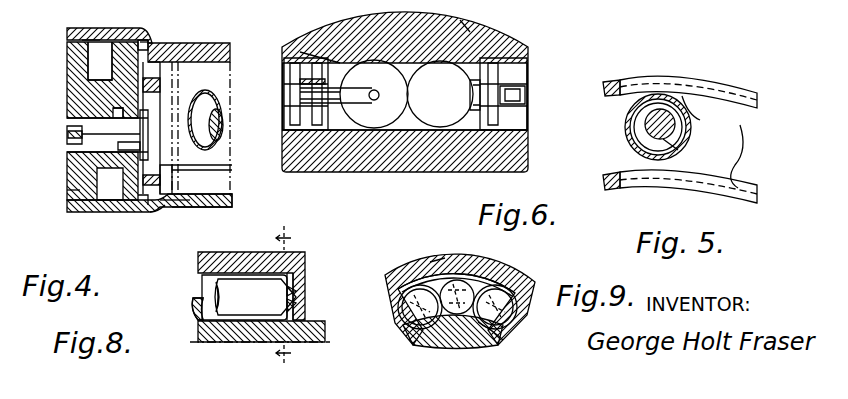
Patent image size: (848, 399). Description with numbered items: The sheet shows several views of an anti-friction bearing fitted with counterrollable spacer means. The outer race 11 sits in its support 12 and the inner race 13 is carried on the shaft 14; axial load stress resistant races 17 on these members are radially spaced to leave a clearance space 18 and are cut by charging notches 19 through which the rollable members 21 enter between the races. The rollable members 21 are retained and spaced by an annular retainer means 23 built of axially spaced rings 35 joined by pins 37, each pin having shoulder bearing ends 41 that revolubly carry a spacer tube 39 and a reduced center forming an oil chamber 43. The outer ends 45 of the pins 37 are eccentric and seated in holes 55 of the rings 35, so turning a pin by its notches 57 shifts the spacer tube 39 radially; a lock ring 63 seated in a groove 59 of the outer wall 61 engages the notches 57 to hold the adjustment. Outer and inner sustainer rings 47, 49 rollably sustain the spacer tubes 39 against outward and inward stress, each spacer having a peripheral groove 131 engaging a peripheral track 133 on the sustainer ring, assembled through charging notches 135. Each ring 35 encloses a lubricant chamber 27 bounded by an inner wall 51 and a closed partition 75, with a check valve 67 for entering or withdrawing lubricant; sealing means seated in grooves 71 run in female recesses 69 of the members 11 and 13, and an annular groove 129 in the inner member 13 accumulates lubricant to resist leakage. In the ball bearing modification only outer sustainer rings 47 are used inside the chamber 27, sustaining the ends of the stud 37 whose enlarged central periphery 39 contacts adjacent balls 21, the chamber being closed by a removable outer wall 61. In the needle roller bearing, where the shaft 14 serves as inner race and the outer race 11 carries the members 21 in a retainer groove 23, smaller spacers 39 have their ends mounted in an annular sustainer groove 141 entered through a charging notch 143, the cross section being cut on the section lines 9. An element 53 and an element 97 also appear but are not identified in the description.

In FIG. 8, the section lines 9 is at (290, 295).
In FIG. 4, the outer race 11 is at (67, 32).
In FIG. 6, the outer race 11 is at (500, 30).
In FIG. 8, the outer race 11 is at (305, 258).
In FIG. 9, the outer race 11 is at (510, 272).
In FIG. 4, the support 12 is at (145, 40).
In FIG. 4, the inner race 13 is at (67, 210).
In FIG. 6, the inner race 13 is at (357, 172).
In FIG. 8, the shaft 14 is at (200, 337).
In FIG. 9, the shaft 14 is at (440, 345).
In FIG. 4, the axial load stress resistant races 17 is at (190, 40).
In FIG. 6, the axial load stress resistant races 17 is at (345, 66).
In FIG. 4, the annular retainer clearance space 18 is at (160, 70).
In FIG. 4, the charging notches 19 is at (160, 48).
In FIG. 6, the charging notches 19 is at (470, 32).
In FIG. 4, the rollable stress transmission members 21 is at (186, 96).
In FIG. 6, the rollable stress transmission members 21 is at (440, 94).
In FIG. 8, the rollable stress transmission members 21 is at (202, 282).
In FIG. 9, the rollable stress transmission members 21 is at (415, 280).
In FIG. 4, the annular retainer means 23 is at (140, 118).
In FIG. 6, the annular retainer means 23 is at (528, 66).
In FIG. 8, the annular retainer means 23 is at (305, 278).
In FIG. 4, the lubricant chamber 27 is at (112, 214).
In FIG. 6, the lubricant chamber 27 is at (472, 95).
In FIG. 4, the retainer rings 35 is at (67, 176).
In FIG. 4, the pins 37 is at (207, 125).
In FIG. 6, the pins 37 is at (375, 100).
In FIG. 5, the pins 37 is at (645, 125).
In FIG. 4, the spacer tubes 39 is at (220, 98).
In FIG. 6, the spacer tubes 39 is at (400, 90).
In FIG. 5, the spacer tubes 39 is at (690, 143).
In FIG. 8, the spacer tubes 39 is at (255, 297).
In FIG. 9, the spacer tubes 39 is at (445, 280).
In FIG. 4, the shoulder bearing ends 41 is at (205, 172).
In FIG. 4, the oil chamber 43 is at (204, 150).
In FIG. 4, the outer ends of pins 45 is at (82, 147).
In FIG. 6, the outer ends of pins 45 is at (320, 97).
In FIG. 5, the outer ends of pins 45 is at (678, 156).
In FIG. 4, the outer sustainer rings 47 is at (150, 42).
In FIG. 6, the outer sustainer rings 47 is at (335, 80).
In FIG. 5, the outer sustainer rings 47 is at (757, 98).
In FIG. 4, the inner sustainer rings 49 is at (172, 208).
In FIG. 5, the inner sustainer rings 49 is at (757, 194).
In FIG. 4, the inner wall of ring 51 is at (67, 95).
In FIG. 4, the lever 53 is at (140, 146).
In FIG. 4, the holes 55 is at (60, 112).
In FIG. 4, the notches 57 is at (67, 133).
In FIG. 4, the groove 59 is at (67, 158).
In FIG. 4, the outer wall 61 is at (67, 192).
In FIG. 4, the lock ring 63 is at (86, 137).
In FIG. 6, the check valve 67 is at (522, 96).
In FIG. 4, the female recesses 69 is at (92, 30).
In FIG. 4, the grooves 71 is at (112, 185).
In FIG. 4, the partition 75 is at (143, 212).
In FIG. 6, the flange 97 is at (470, 108).
In FIG. 4, the annular groove 129 is at (157, 214).
In FIG. 4, the peripheral groove 131 is at (172, 172).
In FIG. 5, the peripheral groove 131 is at (682, 96).
In FIG. 4, the peripheral track 133 is at (195, 208).
In FIG. 5, the peripheral track 133 is at (612, 96).
In FIG. 4, the charging notches 135 is at (140, 135).
In FIG. 5, the charging notches 135 is at (700, 120).
In FIG. 8, the sustainer groove 141 is at (296, 291).
In FIG. 9, the sustainer groove 141 is at (503, 330).
In FIG. 8, the charging notch 143 is at (296, 303).
In FIG. 9, the charging notch 143 is at (470, 262).